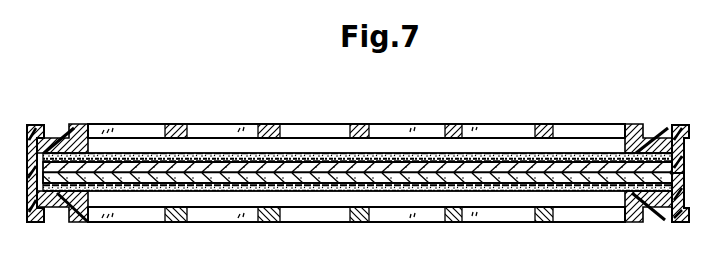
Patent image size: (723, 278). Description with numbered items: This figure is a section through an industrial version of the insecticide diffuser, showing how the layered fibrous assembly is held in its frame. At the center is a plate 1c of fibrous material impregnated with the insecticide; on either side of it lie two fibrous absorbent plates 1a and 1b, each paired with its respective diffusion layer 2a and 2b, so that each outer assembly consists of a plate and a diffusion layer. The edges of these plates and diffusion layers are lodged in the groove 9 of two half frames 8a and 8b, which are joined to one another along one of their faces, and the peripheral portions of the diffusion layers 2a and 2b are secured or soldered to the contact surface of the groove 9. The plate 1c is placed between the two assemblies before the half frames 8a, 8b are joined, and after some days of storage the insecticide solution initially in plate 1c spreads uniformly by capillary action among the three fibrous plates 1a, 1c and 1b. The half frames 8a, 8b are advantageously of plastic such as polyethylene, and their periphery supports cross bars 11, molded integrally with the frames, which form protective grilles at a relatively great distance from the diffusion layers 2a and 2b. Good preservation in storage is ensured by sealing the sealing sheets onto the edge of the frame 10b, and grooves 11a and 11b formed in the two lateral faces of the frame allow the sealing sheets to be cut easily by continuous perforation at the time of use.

The fibrous absorbent plate 1a is at (245, 184).
The fibrous absorbent plate 1b is at (246, 164).
The insecticide-impregnated fibrous plate 1c is at (493, 154).
The diffusion layer 2a is at (218, 192).
The diffusion layer 2b is at (217, 153).
The half frame 8a is at (82, 222).
The half frame 8b is at (78, 124).
The groove 9 is at (612, 155).
The frame 10b is at (35, 121).
The cross bars 11 is at (444, 123).
The groove 11a is at (653, 222).
The groove 11b is at (648, 126).